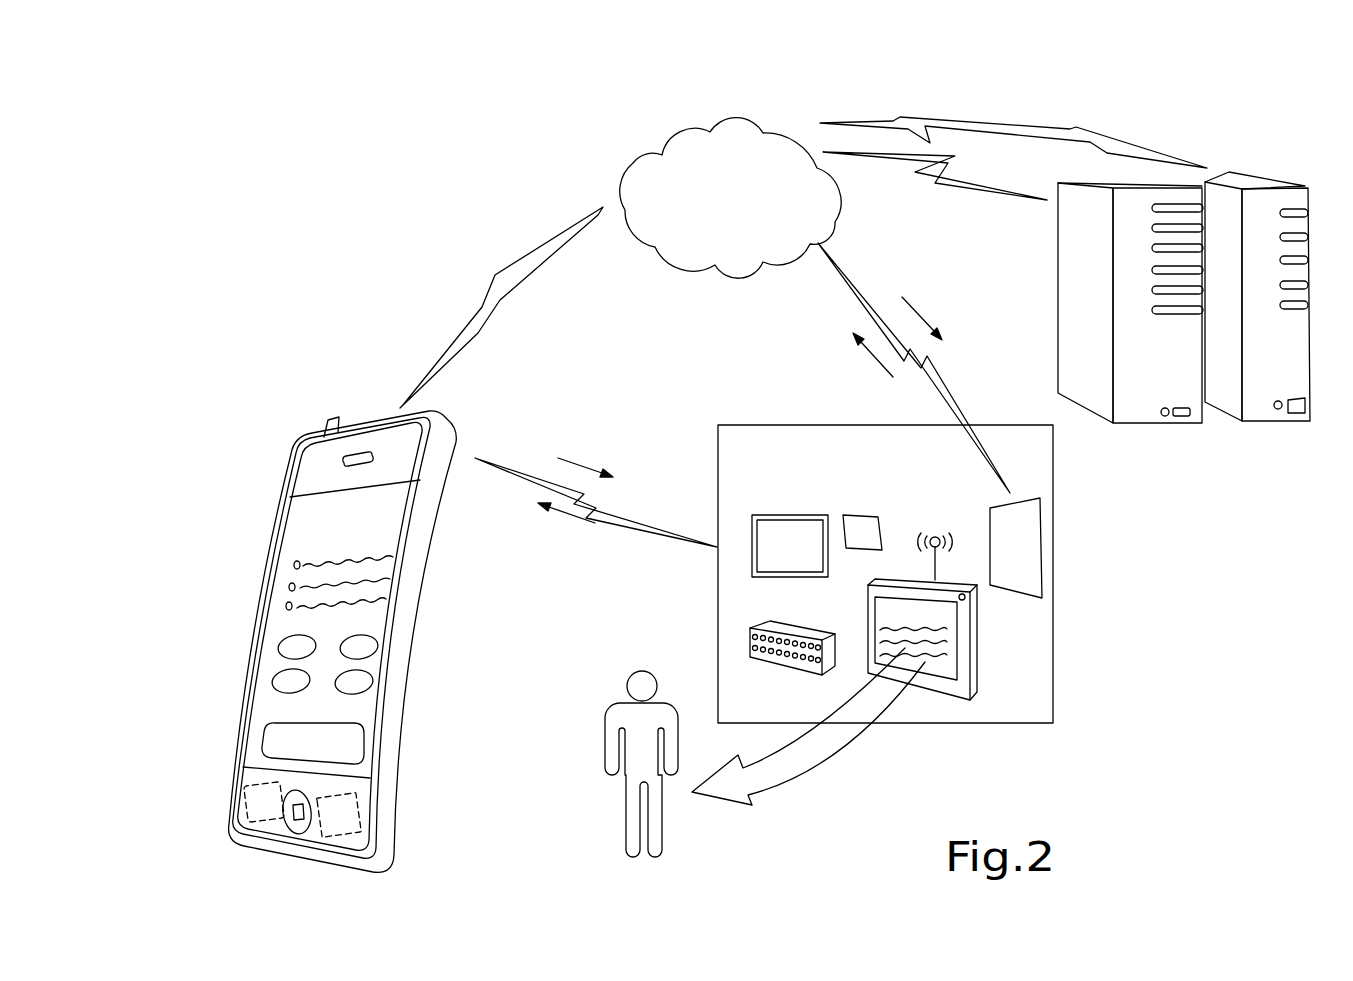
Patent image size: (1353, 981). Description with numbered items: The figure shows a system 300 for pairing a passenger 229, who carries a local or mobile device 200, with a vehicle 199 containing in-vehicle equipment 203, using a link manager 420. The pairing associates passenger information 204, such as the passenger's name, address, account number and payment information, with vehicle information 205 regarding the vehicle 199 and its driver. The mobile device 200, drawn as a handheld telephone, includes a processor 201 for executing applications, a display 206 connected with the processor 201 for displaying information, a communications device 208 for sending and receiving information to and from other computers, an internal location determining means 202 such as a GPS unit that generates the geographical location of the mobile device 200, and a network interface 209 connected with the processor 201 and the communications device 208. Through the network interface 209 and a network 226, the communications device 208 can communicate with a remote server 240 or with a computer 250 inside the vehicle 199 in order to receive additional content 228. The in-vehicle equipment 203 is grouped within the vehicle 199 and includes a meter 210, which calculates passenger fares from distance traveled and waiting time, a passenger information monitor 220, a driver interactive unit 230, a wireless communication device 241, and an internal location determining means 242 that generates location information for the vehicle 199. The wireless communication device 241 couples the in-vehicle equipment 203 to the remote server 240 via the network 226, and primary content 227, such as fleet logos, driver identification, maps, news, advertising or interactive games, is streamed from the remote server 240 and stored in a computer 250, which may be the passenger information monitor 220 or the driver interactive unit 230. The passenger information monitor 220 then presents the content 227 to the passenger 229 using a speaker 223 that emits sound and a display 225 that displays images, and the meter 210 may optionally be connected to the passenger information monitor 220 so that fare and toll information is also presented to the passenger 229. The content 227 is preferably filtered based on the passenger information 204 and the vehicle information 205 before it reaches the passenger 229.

The system 300 is at (292, 133).
The mobile device 200 is at (352, 626).
The processor 201 is at (362, 813).
The internal location determining means 202 is at (462, 447).
The passenger information 204 is at (622, 492).
The vehicle information 205 is at (872, 356).
The display 206 is at (296, 548).
The communications device 208 is at (326, 427).
The network interface 209 is at (245, 790).
The meter 210 is at (368, 746).
The passenger information monitor (PIM) 220 is at (969, 668).
The speaker 223 is at (966, 600).
The display 225 is at (882, 630).
The network 226 is at (710, 250).
The content 227 is at (930, 358).
The additional content 228 is at (306, 607).
The passenger 229 is at (613, 712).
The driver interactive unit (DIU) 230 is at (750, 640).
The remote server 240 is at (1120, 184).
The wireless communication device 241 is at (1030, 546).
The internal location determining means 242 is at (876, 537).
The computer 250 is at (869, 668).
The vehicle 199 is at (1055, 470).
The in-vehicle equipment 203 is at (794, 469).
The link manager 420 is at (1255, 185).